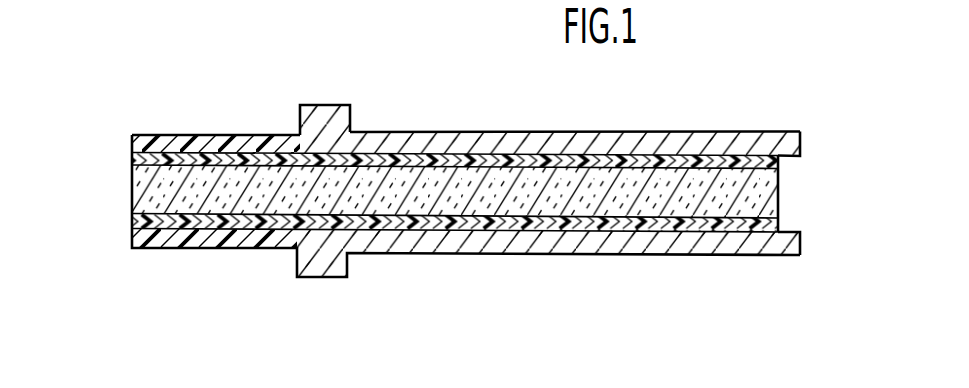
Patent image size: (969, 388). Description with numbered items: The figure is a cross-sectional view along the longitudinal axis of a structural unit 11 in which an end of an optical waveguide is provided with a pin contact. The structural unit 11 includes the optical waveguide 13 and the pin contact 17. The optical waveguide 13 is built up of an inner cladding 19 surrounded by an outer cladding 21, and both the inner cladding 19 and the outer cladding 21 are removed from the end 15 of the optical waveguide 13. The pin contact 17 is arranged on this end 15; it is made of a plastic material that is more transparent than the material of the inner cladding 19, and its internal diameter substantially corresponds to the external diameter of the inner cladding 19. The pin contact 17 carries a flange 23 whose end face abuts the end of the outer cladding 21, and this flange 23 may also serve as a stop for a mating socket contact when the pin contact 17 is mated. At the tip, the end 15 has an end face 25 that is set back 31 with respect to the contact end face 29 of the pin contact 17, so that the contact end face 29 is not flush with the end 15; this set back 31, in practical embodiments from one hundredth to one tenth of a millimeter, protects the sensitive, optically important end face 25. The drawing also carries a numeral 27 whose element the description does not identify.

The laminated composite article 11 is at (553, 262).
The laminate layers 13 is at (108, 133).
The core layer 15 is at (755, 187).
The upper outer layer 17 is at (475, 142).
The lower intermediate layer 19 is at (193, 222).
The upper intermediate layer 21 is at (206, 148).
The boss 23 is at (323, 110).
The edge face 25 is at (779, 206).
The lower outer layer 27 is at (466, 253).
The upper lip 29 is at (797, 145).
The lower lip 31 is at (782, 222).